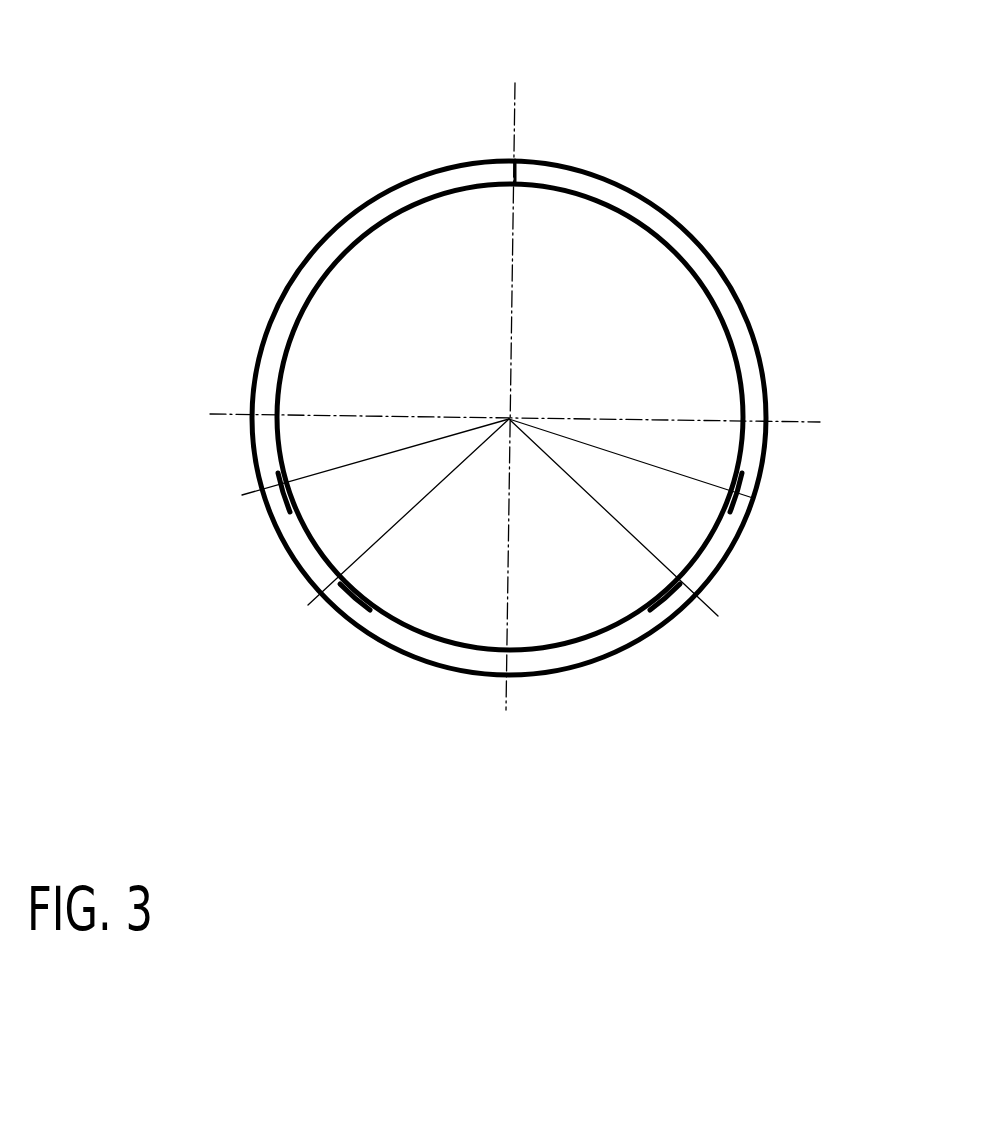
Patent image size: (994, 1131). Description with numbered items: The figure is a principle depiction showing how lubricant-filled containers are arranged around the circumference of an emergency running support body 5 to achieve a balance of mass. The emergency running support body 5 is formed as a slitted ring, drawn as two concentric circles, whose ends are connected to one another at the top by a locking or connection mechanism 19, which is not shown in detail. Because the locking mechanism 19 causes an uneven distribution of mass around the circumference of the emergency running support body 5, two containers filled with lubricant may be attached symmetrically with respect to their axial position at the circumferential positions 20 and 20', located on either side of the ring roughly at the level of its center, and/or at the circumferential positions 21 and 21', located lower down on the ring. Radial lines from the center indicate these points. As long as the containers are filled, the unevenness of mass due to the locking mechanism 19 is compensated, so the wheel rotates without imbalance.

The emergency running support body 5 is at (718, 233).
The locking or connection mechanism 19 is at (552, 146).
The circumferential position 20 is at (811, 484).
The circumferential position 21 is at (766, 579).
The circumferential position 20' is at (196, 485).
The circumferential position 21' is at (267, 610).